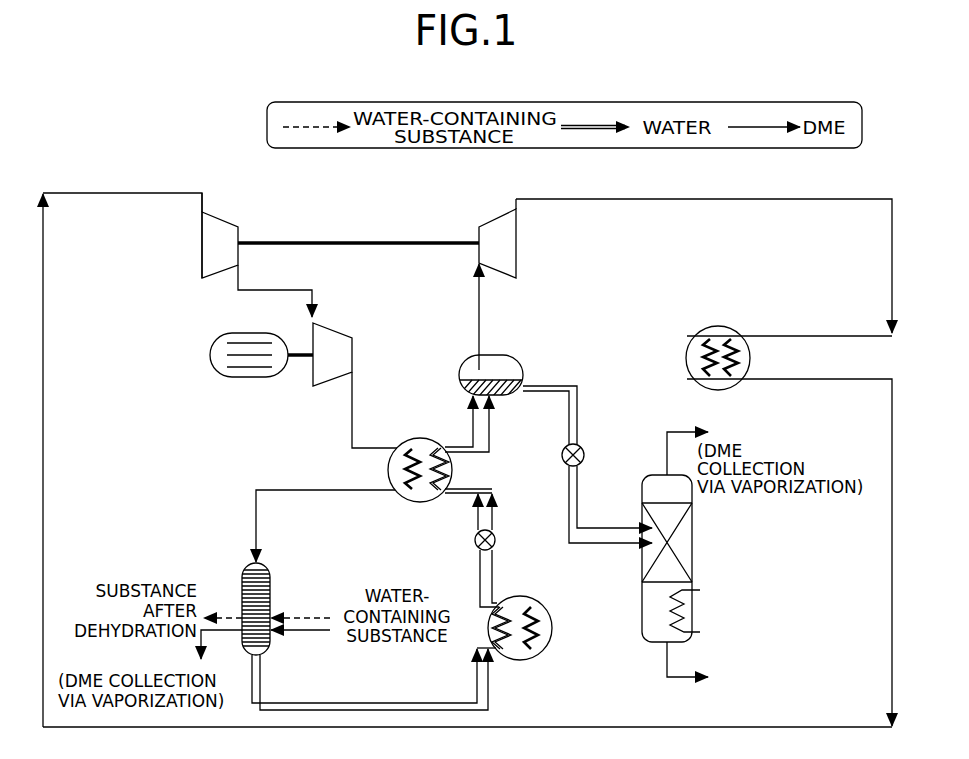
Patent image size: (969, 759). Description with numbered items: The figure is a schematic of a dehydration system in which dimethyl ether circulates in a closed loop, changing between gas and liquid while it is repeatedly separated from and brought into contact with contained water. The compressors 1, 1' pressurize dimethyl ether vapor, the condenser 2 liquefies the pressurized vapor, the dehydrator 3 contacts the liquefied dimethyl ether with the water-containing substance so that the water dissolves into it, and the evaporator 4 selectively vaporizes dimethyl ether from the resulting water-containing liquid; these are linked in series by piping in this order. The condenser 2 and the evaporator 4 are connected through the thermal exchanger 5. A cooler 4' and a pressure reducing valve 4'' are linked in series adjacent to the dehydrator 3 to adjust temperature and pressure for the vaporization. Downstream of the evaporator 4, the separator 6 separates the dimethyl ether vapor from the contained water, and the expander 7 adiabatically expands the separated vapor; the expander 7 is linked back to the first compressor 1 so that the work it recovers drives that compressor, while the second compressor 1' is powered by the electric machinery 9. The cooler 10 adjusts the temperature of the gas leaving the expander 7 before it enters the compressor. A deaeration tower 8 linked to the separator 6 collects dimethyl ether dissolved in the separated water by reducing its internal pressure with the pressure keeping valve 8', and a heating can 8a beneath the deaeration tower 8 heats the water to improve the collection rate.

The first compressor 1 is at (224, 229).
The second compressor 1' is at (348, 351).
The condenser 2 is at (388, 472).
The dehydrator 3 is at (244, 578).
The evaporator 4 is at (469, 469).
The cooler 4' is at (537, 625).
The pressure reducing valve 4'' is at (505, 525).
The thermal exchanger 5 is at (420, 492).
The separator 6 is at (500, 356).
The expander 7 is at (517, 240).
The deaeration tower 8 is at (685, 537).
The pressure keeping valve 8' is at (592, 442).
The heating can 8a is at (696, 650).
The electric machinery 9 is at (222, 377).
The cooler 10 is at (750, 360).